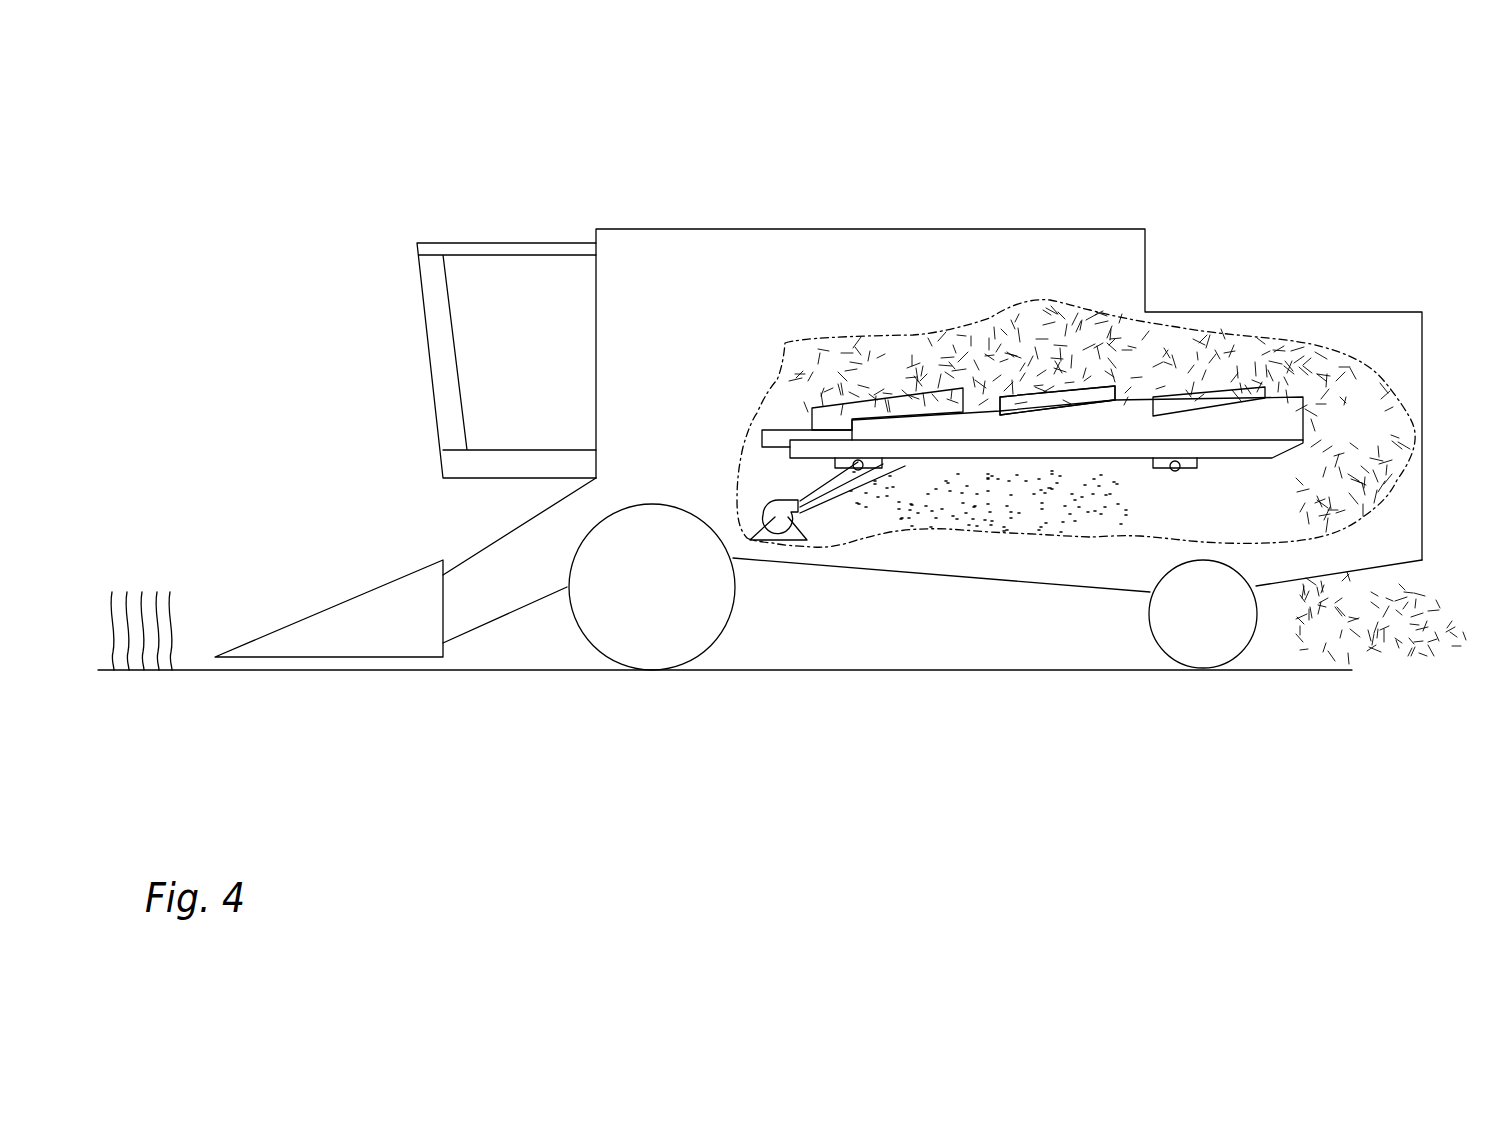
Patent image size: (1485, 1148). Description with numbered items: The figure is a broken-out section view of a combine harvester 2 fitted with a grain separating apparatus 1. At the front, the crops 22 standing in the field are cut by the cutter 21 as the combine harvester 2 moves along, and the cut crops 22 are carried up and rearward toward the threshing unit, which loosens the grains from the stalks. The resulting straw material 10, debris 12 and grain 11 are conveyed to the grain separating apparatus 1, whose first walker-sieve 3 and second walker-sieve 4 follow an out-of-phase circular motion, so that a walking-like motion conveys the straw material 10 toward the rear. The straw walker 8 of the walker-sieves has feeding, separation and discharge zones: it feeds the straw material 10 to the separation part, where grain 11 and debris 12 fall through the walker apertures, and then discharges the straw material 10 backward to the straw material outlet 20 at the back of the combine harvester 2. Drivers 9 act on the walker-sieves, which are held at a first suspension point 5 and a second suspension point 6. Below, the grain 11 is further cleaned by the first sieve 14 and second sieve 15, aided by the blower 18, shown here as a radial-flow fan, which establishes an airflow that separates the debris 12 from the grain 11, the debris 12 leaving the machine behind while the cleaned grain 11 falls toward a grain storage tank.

The grain separating apparatus 1 is at (1062, 320).
The combine harvester 2 is at (660, 228).
The first walker-sieve 3 is at (958, 436).
The second walker-sieve 4 is at (897, 405).
The first suspension point 5 is at (1173, 470).
The second suspension point 6 is at (848, 470).
The straw walker 8 is at (805, 407).
The drivers 9 is at (965, 395).
The straw material 10 is at (925, 340).
The grain 11 is at (1202, 370).
The debris 12 is at (1317, 507).
The first sieve 14 is at (762, 438).
The second sieve 15 is at (790, 450).
The blower 18 is at (778, 520).
The straw material outlet 20 is at (1350, 567).
The cutter 21 is at (343, 602).
The crops 22 is at (152, 558).